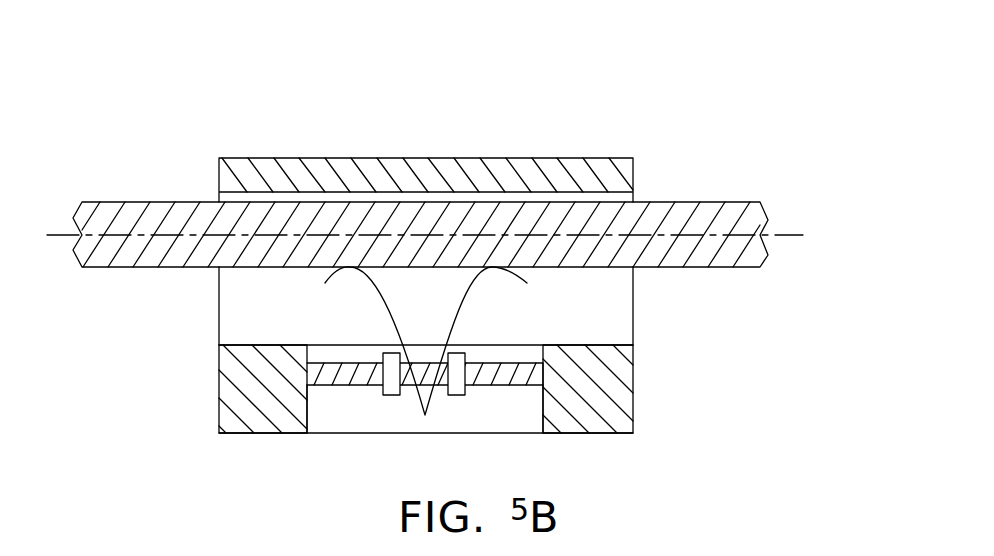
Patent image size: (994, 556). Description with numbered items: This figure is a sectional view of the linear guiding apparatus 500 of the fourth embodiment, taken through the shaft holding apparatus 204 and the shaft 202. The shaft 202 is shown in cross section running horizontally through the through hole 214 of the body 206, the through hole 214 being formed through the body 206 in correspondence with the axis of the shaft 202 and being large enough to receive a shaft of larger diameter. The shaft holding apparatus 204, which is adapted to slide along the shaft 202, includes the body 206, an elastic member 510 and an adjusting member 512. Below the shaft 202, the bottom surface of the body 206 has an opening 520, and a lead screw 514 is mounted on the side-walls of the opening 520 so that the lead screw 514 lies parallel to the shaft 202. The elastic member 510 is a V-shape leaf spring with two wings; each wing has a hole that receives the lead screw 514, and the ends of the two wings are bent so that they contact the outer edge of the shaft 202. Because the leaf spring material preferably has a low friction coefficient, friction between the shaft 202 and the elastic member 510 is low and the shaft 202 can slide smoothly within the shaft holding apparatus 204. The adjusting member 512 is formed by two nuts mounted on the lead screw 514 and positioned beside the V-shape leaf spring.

The linear guiding apparatus 500 is at (842, 53).
The shaft 202 is at (685, 202).
The shaft holding apparatus 204 is at (767, 298).
The body 206 is at (633, 375).
The through hole 214 is at (243, 314).
The elastic member 510 is at (470, 298).
The adjusting member 512 is at (470, 345).
The lead screw 514 is at (513, 388).
The opening 520 is at (375, 412).